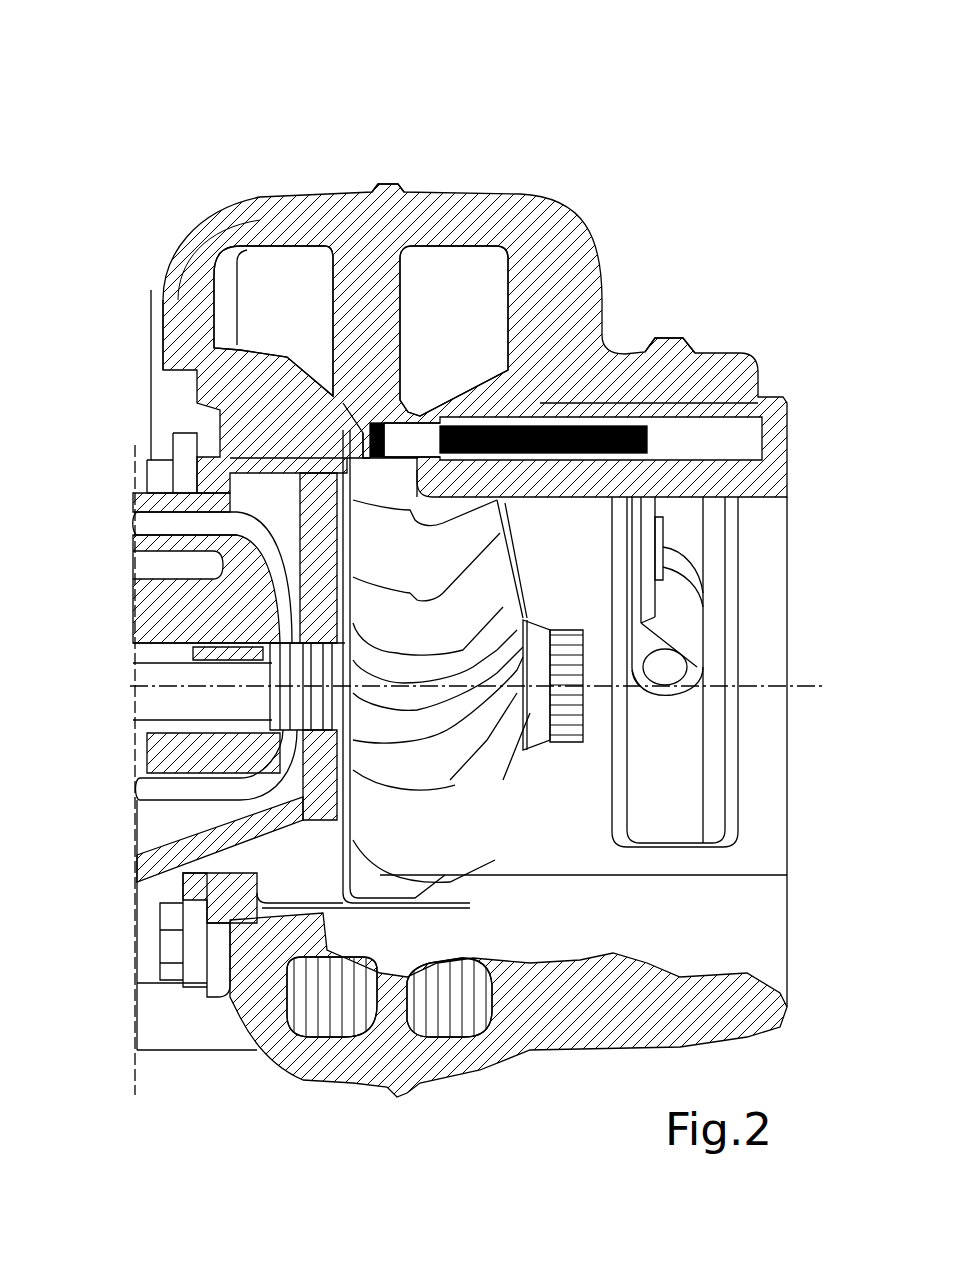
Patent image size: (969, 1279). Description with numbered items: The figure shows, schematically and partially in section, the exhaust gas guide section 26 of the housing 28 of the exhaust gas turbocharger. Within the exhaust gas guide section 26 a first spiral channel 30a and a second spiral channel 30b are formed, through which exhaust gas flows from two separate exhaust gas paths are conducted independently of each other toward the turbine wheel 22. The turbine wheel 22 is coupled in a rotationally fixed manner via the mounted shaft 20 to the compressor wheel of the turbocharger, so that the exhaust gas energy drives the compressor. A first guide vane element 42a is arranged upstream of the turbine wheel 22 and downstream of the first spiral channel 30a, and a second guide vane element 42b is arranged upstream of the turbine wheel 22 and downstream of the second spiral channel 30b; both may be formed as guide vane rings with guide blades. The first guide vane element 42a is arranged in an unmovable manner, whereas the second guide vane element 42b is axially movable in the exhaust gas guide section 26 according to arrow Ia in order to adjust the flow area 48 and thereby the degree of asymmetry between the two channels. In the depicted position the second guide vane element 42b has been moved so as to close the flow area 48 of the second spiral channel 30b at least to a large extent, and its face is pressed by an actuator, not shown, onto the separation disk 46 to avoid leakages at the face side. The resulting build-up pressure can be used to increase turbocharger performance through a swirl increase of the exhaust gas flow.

The exhaust gas guide section 26 is at (299, 148).
The housing 28 is at (424, 194).
The first spiral channel 30a is at (276, 290).
The second spiral channel 30b is at (470, 290).
The first guide vane element 42a is at (365, 437).
The second guide vane element 42b is at (520, 432).
The separation disk 46 is at (378, 460).
The flow area 48 is at (400, 419).
The arrow Ia is at (690, 357).
The shaft 20 is at (148, 704).
The turbine wheel 22 is at (482, 846).